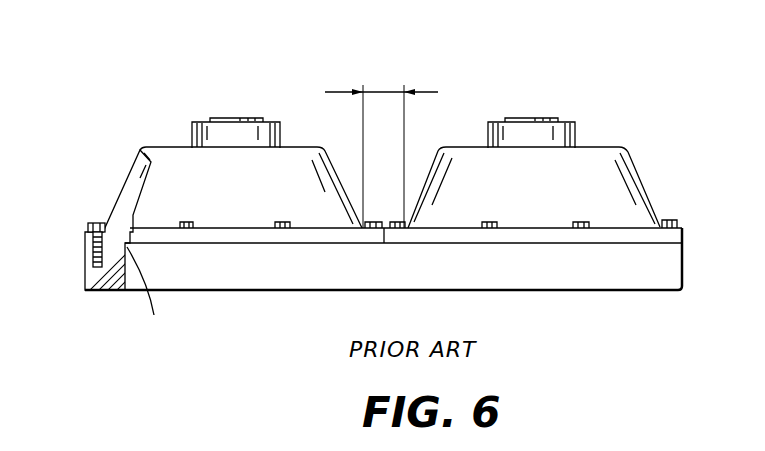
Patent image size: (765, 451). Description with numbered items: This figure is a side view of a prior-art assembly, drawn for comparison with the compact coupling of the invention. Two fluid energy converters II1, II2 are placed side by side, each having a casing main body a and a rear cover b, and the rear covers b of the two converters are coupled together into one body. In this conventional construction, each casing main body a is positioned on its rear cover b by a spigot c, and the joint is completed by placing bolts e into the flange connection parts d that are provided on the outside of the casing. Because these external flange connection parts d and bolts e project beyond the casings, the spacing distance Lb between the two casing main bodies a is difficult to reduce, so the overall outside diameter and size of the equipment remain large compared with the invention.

The casing main body a is at (118, 163).
The rear cover b is at (245, 297).
The spigot c is at (148, 293).
The flange connection part d is at (85, 238).
The bolt e is at (90, 222).
The spacing distance Lb is at (387, 92).
The fluid energy converter II1 is at (134, 88).
The fluid energy converter II2 is at (622, 92).